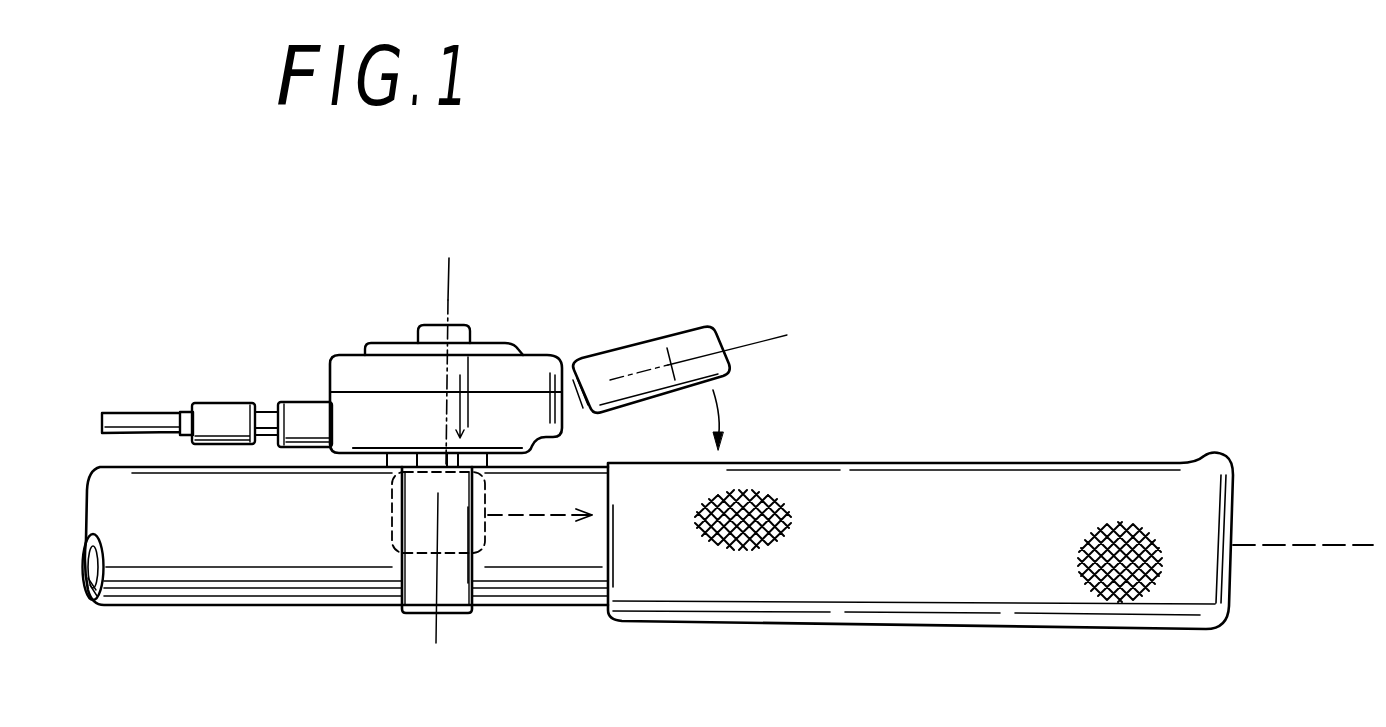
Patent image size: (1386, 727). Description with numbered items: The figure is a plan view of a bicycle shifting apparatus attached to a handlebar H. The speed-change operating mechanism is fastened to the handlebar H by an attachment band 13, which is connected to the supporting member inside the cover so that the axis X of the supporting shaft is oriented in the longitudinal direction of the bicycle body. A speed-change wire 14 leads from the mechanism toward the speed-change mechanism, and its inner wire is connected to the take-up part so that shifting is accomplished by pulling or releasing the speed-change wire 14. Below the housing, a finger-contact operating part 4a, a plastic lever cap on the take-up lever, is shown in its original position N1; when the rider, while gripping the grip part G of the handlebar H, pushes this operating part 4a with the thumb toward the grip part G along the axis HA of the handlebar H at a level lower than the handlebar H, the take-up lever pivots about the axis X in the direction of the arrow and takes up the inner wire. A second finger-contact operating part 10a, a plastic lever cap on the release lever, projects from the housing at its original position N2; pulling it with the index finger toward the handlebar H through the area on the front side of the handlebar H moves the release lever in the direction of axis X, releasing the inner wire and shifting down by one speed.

The speed-change wire 14 is at (143, 420).
The axis of the supporting shaft X is at (450, 288).
The finger-contact operating part 10a is at (640, 350).
The original position of the release lever N2 is at (758, 340).
The finger-contact operating part 4a is at (390, 530).
The handlebar H is at (197, 588).
The attachment band 13 is at (422, 597).
The original position of the take-up lever N1 is at (440, 630).
The grip part G is at (888, 612).
The axis of the handlebar HA is at (1303, 569).